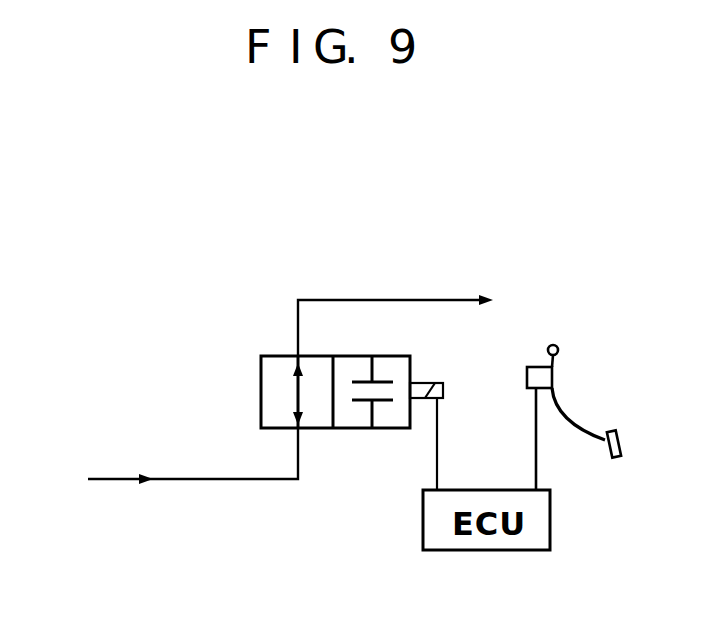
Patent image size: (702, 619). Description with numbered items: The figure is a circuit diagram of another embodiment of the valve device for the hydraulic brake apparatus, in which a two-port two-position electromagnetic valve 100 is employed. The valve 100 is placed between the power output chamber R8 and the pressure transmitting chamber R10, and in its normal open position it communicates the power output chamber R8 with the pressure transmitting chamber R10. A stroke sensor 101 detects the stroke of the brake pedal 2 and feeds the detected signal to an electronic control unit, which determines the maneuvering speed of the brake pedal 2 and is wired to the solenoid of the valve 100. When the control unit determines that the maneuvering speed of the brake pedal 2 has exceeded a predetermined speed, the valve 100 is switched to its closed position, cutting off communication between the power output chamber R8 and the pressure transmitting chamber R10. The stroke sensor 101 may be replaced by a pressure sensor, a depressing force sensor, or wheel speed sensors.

The two-port two-position electromagnetic valve 100 is at (332, 428).
The stroke sensor 101 is at (543, 388).
The brake pedal 2 is at (573, 412).
The power output chamber R8 is at (168, 463).
The pressure transmitting chamber R10 is at (426, 325).